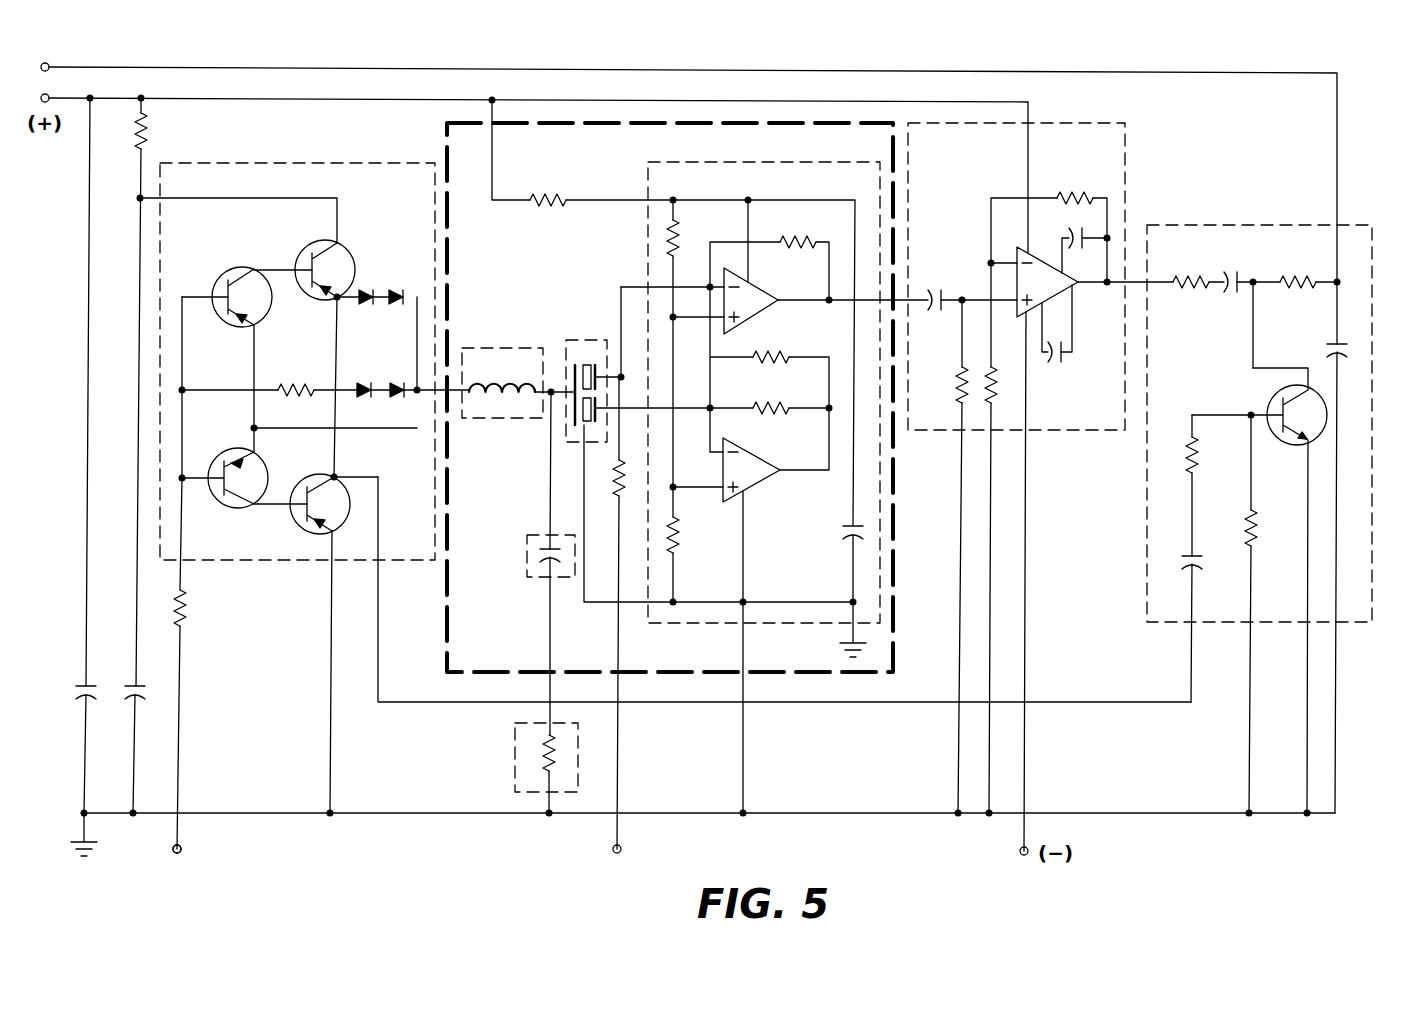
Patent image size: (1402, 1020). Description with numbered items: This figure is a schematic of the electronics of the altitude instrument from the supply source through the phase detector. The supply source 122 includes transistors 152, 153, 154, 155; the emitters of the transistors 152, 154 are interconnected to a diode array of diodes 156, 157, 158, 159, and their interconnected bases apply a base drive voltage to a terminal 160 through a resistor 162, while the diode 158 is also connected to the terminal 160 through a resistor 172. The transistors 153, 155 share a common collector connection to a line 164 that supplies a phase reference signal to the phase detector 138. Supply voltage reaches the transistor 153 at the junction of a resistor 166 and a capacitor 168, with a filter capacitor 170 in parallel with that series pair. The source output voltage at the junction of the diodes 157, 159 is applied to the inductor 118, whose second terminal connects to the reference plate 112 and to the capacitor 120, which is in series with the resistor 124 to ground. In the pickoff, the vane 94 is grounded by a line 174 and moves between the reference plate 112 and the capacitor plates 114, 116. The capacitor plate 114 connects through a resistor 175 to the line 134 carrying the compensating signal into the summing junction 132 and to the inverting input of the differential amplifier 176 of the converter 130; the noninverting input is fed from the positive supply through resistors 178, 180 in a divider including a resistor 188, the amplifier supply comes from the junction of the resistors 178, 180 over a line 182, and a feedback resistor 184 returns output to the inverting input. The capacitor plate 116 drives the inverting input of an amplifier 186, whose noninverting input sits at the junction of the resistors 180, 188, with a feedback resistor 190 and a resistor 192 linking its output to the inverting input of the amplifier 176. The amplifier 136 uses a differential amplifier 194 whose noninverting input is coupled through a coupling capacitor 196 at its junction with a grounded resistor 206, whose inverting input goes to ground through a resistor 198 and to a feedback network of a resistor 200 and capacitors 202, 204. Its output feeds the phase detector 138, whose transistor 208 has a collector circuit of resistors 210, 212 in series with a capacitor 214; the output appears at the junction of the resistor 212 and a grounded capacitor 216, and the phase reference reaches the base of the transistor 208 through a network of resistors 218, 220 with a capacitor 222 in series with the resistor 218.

The vane 94 is at (585, 362).
The reference plate 112 is at (574, 370).
The capacitor plate 114 is at (598, 365).
The capacitor plate 116 is at (598, 412).
The inductor 118 is at (483, 377).
The capacitor 120 is at (545, 545).
The supply source 122 is at (232, 561).
The resistor 124 is at (543, 758).
The differential-to-single ended converter 130 is at (758, 625).
The summing junction 132 is at (622, 376).
The line 134 is at (620, 750).
The amplifier 136 is at (1127, 172).
The phase detector 138 is at (1145, 520).
The transistor 152 is at (222, 275).
The transistor 153 is at (297, 258).
The transistor 154 is at (235, 450).
The transistor 155 is at (312, 473).
The diode 156 is at (366, 290).
The diode 157 is at (402, 306).
The diode 158 is at (365, 385).
The diode 159 is at (393, 403).
The terminal 160 is at (182, 852).
The resistor 162 is at (188, 624).
The line 164 is at (445, 703).
The resistor 166 is at (152, 146).
The capacitor 168 is at (128, 685).
The filter capacitor 170 is at (80, 685).
The resistor 172 is at (292, 384).
The line 174 is at (598, 604).
The resistor 175 is at (616, 498).
The differential amplifier 176 is at (750, 305).
The resistor 178 is at (547, 194).
The resistor 180 is at (678, 240).
The line 182 is at (750, 215).
The feedback resistor 184 is at (816, 252).
The amplifier 186 is at (751, 470).
The resistor 188 is at (675, 545).
The feedback resistor 190 is at (778, 404).
The resistor 192 is at (778, 356).
The differential amplifier 194 is at (1042, 280).
The coupling capacitor 196 is at (938, 287).
The resistor 198 is at (992, 390).
The resistor 200 is at (1069, 194).
The capacitor 202 is at (1086, 236).
The capacitor 204 is at (1053, 366).
The resistor 206 is at (957, 376).
The transistor 208 is at (1276, 394).
The resistor 210 is at (1199, 287).
The resistor 212 is at (1307, 273).
The capacitor 214 is at (1232, 271).
The capacitor 216 is at (1328, 346).
The resistor 218 is at (1185, 444).
The resistor 220 is at (1258, 533).
The capacitor 222 is at (1207, 558).